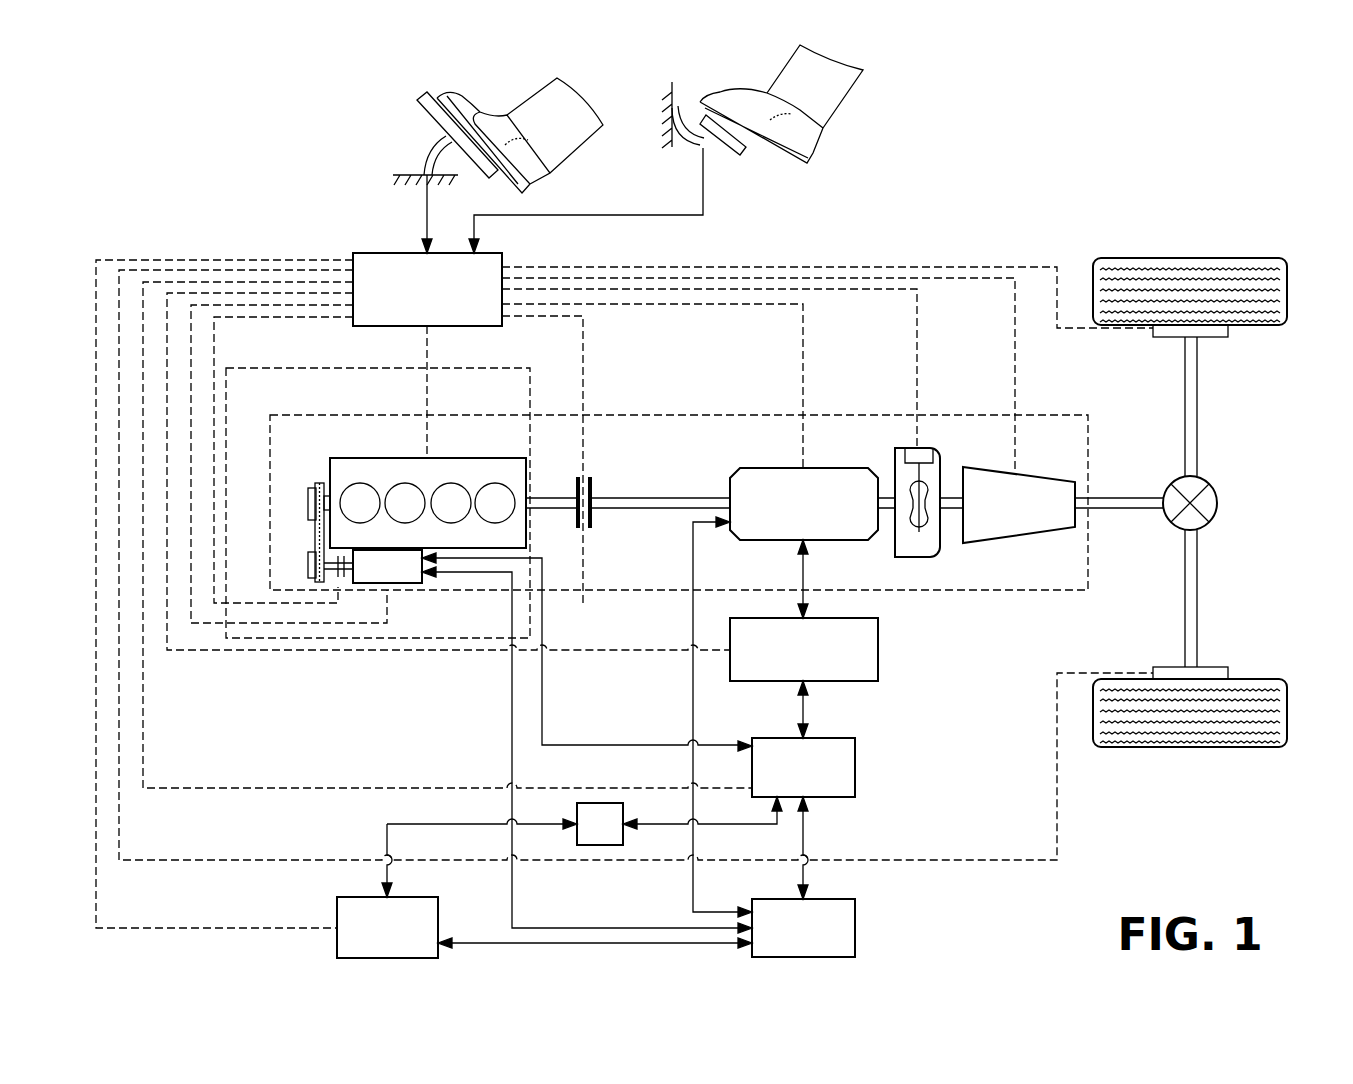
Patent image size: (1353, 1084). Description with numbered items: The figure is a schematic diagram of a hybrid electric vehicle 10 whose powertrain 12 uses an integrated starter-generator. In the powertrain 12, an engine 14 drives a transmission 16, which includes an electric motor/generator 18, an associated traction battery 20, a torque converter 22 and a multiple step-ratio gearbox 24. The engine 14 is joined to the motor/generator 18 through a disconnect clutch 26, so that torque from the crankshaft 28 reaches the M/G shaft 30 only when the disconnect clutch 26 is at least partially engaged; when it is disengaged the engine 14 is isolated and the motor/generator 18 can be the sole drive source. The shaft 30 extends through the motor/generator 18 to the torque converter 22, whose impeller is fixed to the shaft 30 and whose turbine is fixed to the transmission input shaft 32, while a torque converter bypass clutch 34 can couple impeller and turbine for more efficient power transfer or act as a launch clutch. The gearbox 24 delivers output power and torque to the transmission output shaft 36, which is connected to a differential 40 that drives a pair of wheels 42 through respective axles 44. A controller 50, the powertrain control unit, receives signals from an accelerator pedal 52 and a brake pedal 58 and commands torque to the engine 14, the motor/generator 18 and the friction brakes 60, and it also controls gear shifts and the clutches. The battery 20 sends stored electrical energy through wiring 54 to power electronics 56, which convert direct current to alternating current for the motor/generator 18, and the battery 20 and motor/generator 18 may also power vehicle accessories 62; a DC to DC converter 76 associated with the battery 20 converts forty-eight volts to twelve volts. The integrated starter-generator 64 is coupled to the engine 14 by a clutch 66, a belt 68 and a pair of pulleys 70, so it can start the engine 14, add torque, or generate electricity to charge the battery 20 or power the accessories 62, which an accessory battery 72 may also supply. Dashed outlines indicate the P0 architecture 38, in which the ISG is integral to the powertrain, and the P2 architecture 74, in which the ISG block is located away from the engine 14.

The hybrid electric vehicle 10 is at (955, 172).
The powertrain 12 is at (497, 701).
The engine 14 is at (413, 458).
The transmission 16 is at (882, 427).
The electric motor/generator 18 is at (775, 468).
The traction battery 20 is at (860, 765).
The torque converter 22 is at (930, 500).
The gearbox 24 is at (1020, 543).
The disconnect clutch 26 is at (600, 490).
The crankshaft 28 is at (327, 496).
The M/G shaft 30 is at (672, 497).
The transmission input shaft 32 is at (950, 485).
The torque converter bypass clutch 34 is at (915, 455).
The transmission output shaft 36 is at (1130, 497).
The P0 architecture 38 is at (277, 640).
The differential 40 is at (1218, 500).
The wheels 42 is at (1193, 258).
The axles 44 is at (1200, 400).
The controller 50 is at (385, 253).
The accelerator pedal 52 is at (437, 125).
The wiring 54 is at (810, 712).
The power electronics 56 is at (878, 648).
The brake pedal 58 is at (742, 153).
The friction brakes 60 is at (1228, 330).
The vehicle accessories 62 is at (860, 928).
The integrated starter-generator 64 is at (400, 583).
The clutch 66 is at (337, 578).
The belt 68 is at (313, 503).
The pulleys 70 is at (312, 492).
The accessory battery 72 is at (440, 915).
The P2 architecture 74 is at (1032, 413).
The DC to DC converter 76 is at (587, 837).